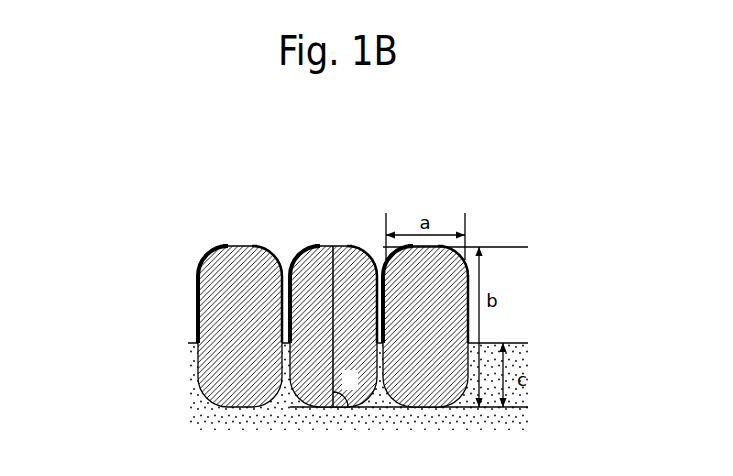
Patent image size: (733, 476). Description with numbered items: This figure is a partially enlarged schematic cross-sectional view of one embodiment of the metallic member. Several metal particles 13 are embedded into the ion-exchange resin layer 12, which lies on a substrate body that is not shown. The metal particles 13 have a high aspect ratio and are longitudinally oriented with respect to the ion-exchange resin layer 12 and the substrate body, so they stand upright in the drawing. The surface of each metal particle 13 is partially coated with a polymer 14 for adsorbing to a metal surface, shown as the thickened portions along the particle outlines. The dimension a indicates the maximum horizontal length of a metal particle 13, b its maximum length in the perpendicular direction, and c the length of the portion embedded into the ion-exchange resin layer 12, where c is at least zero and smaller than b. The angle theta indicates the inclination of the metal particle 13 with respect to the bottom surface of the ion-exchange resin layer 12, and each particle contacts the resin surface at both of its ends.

The ion-exchange resin layer 12 is at (202, 412).
The metal particle 13 is at (217, 369).
The polymer 14 is at (200, 263).